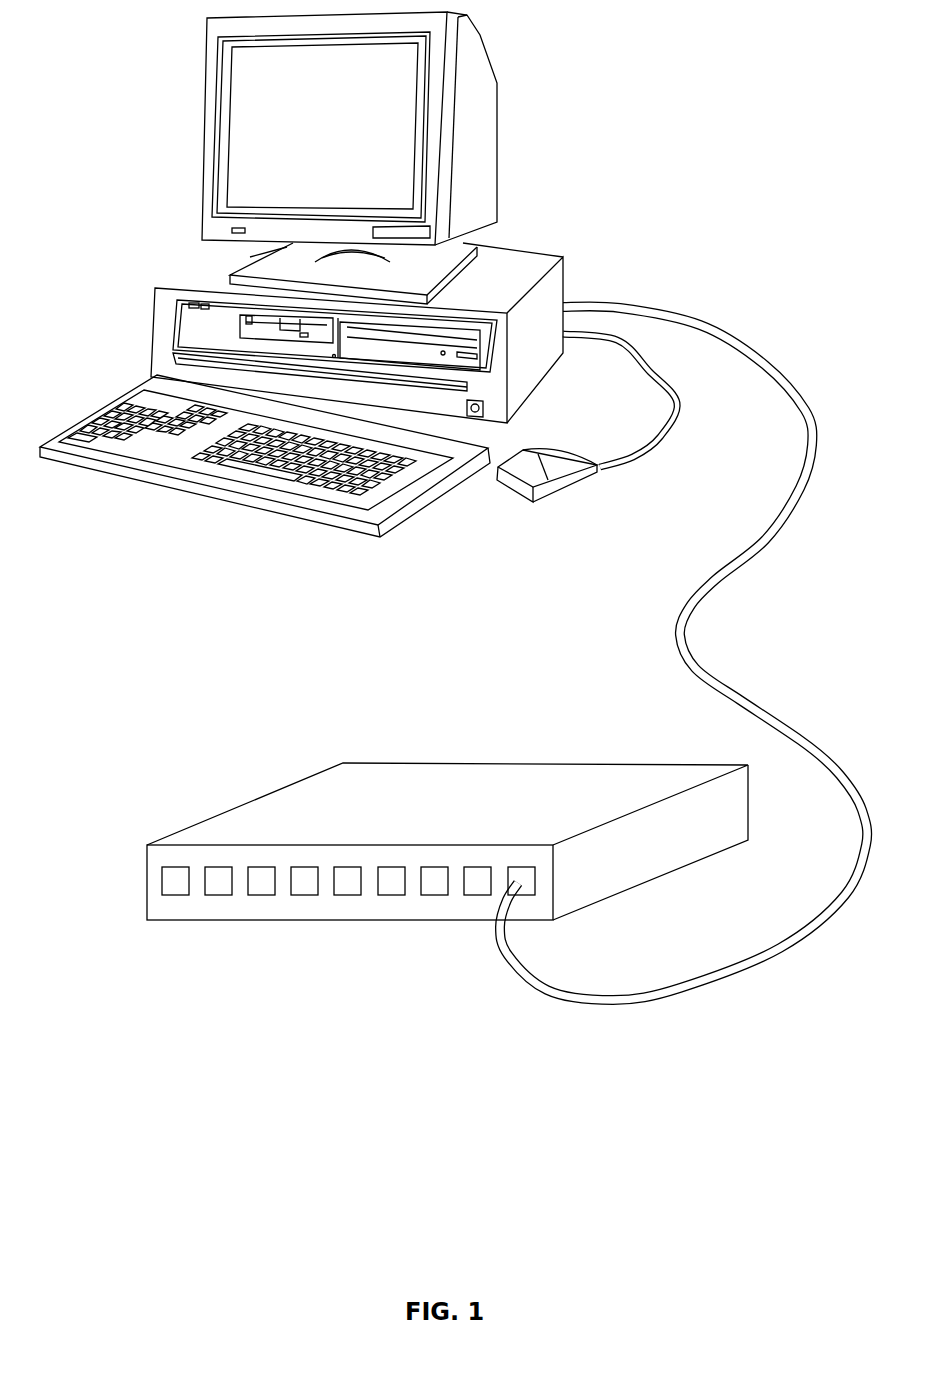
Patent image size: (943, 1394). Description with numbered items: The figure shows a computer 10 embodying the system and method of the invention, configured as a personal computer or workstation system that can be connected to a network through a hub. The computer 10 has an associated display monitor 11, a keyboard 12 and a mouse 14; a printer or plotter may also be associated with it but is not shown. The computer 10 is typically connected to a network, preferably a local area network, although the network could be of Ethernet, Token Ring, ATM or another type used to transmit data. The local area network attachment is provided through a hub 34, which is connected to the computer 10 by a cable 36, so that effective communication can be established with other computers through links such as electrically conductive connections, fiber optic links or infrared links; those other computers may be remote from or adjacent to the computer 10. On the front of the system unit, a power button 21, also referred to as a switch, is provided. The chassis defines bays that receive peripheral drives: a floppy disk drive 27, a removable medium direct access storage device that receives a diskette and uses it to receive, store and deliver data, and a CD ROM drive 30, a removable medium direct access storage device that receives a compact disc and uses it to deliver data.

The computer 10 is at (150, 207).
The display monitor 11 is at (207, 62).
The keyboard 12 is at (94, 463).
The mouse 14 is at (553, 493).
The power button 21 is at (359, 333).
The floppy disk drive 27 is at (250, 330).
The CD ROM drive 30 is at (477, 348).
The hub 34 is at (188, 718).
The cable 36 is at (760, 537).